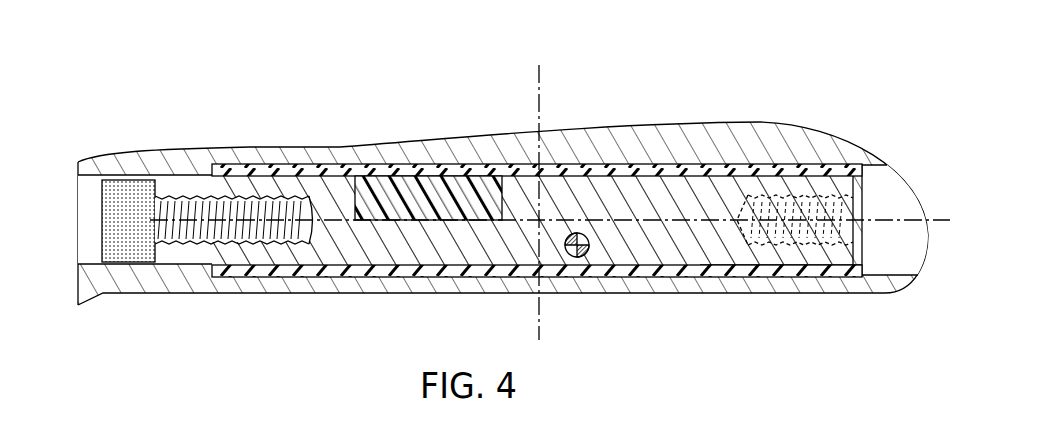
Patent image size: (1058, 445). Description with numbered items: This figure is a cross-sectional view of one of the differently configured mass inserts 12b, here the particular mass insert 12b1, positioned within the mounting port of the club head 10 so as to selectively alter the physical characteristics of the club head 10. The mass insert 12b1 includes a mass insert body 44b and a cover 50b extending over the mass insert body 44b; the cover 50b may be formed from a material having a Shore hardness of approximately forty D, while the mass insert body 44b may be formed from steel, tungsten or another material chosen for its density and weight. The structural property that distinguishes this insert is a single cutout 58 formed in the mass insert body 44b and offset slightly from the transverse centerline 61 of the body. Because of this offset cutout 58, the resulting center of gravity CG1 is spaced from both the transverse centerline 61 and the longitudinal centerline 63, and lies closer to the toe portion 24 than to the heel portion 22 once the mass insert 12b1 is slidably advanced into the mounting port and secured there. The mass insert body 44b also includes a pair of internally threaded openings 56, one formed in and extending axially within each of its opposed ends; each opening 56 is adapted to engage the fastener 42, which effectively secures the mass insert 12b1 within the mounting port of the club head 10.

The club head 10 is at (822, 141).
The heel portion 22 is at (78, 163).
The toe portion 24 is at (906, 181).
The fastener 42 is at (120, 265).
The mass insert body 44b is at (750, 266).
The cover 50b is at (402, 165).
The internally threaded opening 56 is at (322, 244).
The cutout 58 is at (483, 165).
The transverse centerline 61 is at (543, 68).
The longitudinal centerline 63 is at (910, 218).
The mass insert 12b is at (650, 254).
The mass insert 12b1 is at (769, 267).
The center of gravity CG1 is at (584, 258).